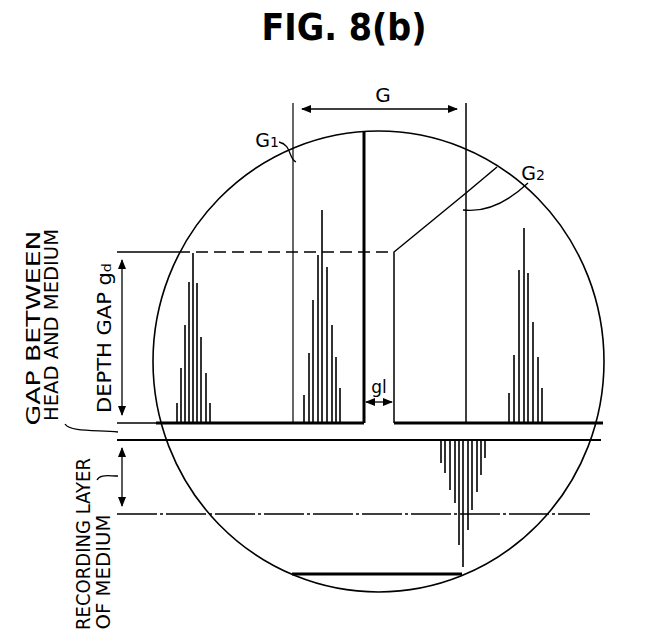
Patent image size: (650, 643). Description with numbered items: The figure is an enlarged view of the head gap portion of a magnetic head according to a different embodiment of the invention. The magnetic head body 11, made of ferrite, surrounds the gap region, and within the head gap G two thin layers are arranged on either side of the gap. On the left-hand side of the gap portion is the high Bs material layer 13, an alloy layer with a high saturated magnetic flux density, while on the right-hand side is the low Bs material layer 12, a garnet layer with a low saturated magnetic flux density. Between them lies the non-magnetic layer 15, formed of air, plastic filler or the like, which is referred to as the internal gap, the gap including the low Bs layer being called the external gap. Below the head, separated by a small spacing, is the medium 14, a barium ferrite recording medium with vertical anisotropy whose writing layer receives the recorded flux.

The magnetic head body 11 is at (233, 207).
The low Bs material layer 12 is at (430, 228).
The high Bs material layer 13 is at (366, 167).
The medium 14 is at (553, 485).
The non-magnetic layer 15 is at (378, 321).